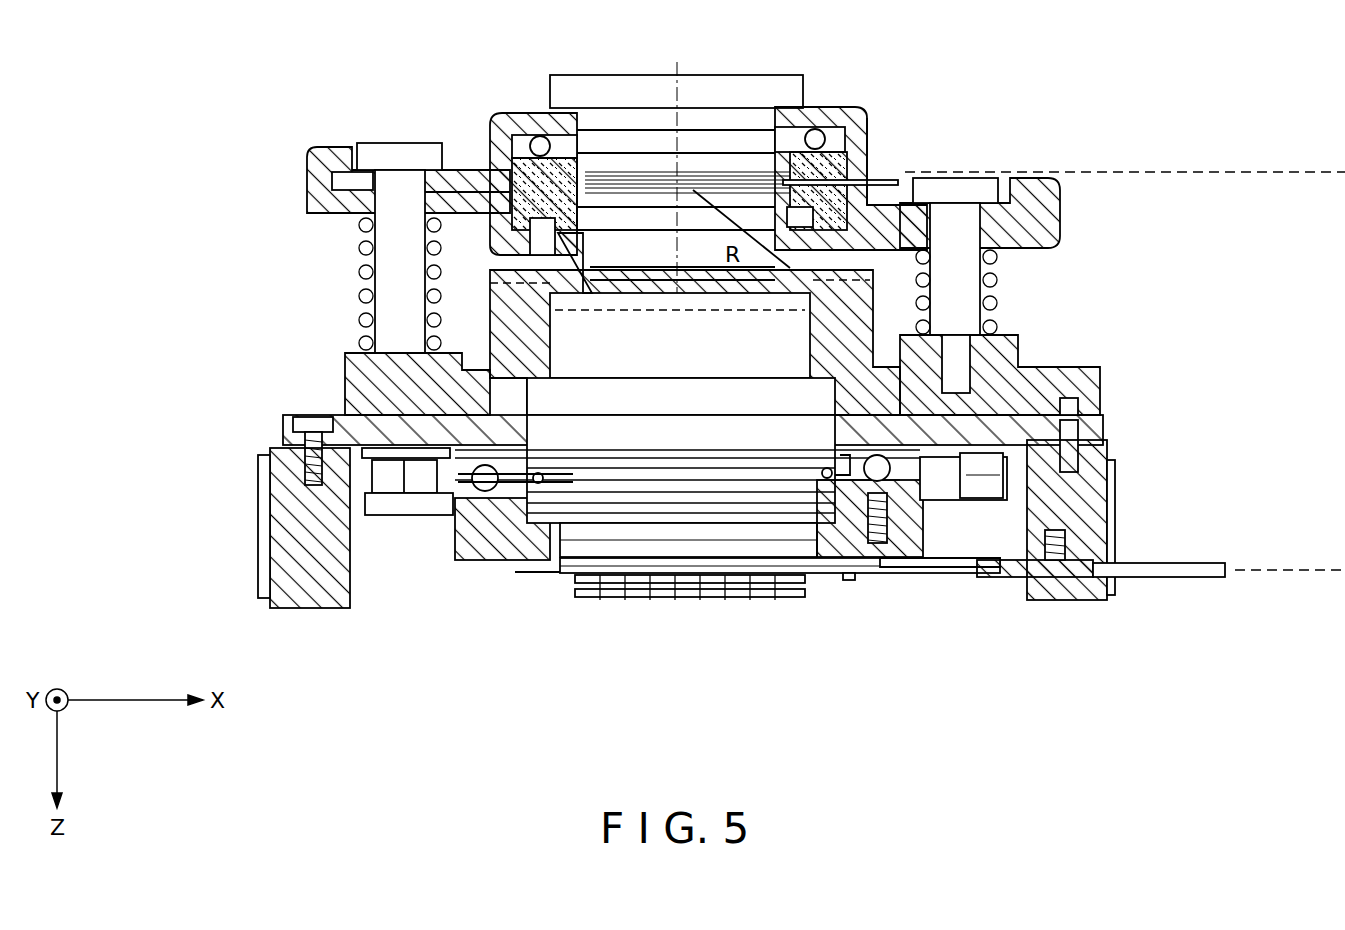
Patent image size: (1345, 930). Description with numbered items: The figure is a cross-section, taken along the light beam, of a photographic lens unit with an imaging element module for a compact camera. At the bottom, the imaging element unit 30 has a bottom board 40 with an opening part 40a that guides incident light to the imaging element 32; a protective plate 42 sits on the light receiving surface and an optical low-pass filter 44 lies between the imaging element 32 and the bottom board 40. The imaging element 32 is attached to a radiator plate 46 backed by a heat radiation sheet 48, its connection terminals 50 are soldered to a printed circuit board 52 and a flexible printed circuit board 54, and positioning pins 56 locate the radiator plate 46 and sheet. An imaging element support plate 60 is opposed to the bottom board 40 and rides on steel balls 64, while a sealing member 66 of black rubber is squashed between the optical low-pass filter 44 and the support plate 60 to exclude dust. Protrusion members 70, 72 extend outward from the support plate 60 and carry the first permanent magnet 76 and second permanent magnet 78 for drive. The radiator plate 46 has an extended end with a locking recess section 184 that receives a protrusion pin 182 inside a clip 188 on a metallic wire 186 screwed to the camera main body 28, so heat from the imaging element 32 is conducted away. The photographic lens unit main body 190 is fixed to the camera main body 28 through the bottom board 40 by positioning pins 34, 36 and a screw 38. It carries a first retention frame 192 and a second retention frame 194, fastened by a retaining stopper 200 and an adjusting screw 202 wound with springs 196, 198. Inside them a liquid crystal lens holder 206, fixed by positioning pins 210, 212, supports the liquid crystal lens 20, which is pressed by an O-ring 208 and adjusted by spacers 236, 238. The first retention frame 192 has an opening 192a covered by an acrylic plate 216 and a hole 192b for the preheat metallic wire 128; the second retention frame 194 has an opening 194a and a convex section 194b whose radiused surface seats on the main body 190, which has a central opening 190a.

The liquid crystal lens 20 is at (632, 140).
The camera main body 28 is at (1075, 530).
The imaging element unit 30 is at (683, 692).
The imaging element 32 is at (595, 515).
The positioning pin 34 is at (387, 467).
The positioning pin 36 is at (1077, 450).
The screw 38 is at (303, 418).
The bottom board 40 is at (397, 428).
The opening part 40a is at (687, 379).
The protective plate 42 is at (617, 533).
The optical low-pass filter 44 is at (738, 490).
The radiator plate 46 is at (818, 574).
The heat radiation sheet 48 is at (547, 578).
The connection terminals 50 is at (590, 598).
The printed circuit board 52 is at (655, 590).
The flexible printed circuit board 54 is at (705, 600).
The positioning pins 56 is at (850, 582).
The imaging element support plate 60 is at (487, 545).
The steel balls 64 is at (485, 466).
The sealing member 66 is at (812, 490).
The protrusion member 70 is at (395, 500).
The protrusion member 72 is at (968, 500).
The first permanent magnet 76 is at (420, 496).
The second permanent magnet 78 is at (990, 462).
The metallic wire 128 is at (890, 176).
The protrusion pin 182 is at (992, 580).
The locking recess section 184 is at (950, 580).
The metallic wire 186 is at (1118, 580).
The clip 188 is at (1018, 580).
The photographic lens unit main body 190 is at (1025, 357).
The opening 190a is at (652, 290).
The first retention frame A 192 is at (322, 186).
The opening 192a is at (700, 120).
The hole 192b is at (870, 133).
The second retention frame B 194 is at (1054, 215).
The opening 194a is at (625, 262).
The convex section 194b is at (768, 270).
The spring 196 is at (356, 241).
The spring 198 is at (998, 262).
The retaining stopper 200 is at (385, 148).
The adjusting screw 202 is at (980, 188).
The liquid crystal lens holder 206 is at (572, 187).
The O-ring 208 is at (540, 136).
The positioning pin 210 is at (540, 256).
The positioning pin 212 is at (808, 176).
The acrylic plate 216 is at (728, 92).
The spacer 236 is at (545, 200).
The spacer 238 is at (773, 150).